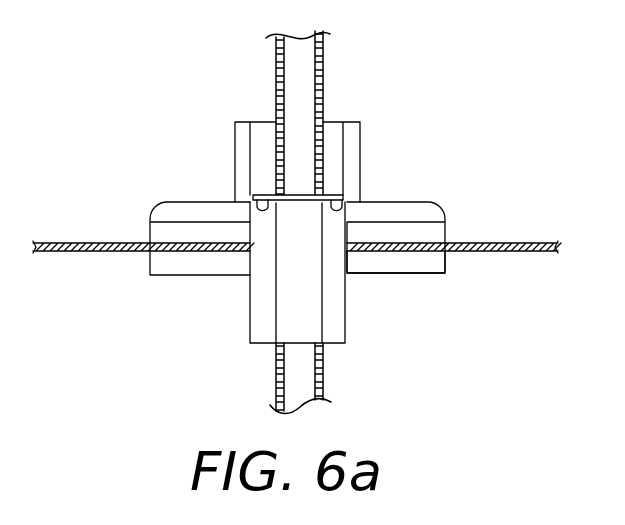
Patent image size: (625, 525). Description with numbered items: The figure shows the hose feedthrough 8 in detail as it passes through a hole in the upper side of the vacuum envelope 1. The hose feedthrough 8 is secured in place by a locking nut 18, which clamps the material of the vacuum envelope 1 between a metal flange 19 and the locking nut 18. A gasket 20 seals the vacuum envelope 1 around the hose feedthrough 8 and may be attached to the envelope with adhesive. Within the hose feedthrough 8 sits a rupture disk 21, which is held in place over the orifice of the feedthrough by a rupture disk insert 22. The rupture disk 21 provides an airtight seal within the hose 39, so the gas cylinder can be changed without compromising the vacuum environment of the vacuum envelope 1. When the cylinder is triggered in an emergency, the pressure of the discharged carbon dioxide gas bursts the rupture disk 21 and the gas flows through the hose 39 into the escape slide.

The vacuum envelope 1 is at (82, 243).
The hose feedthrough 8 is at (257, 295).
The locking nut 18 is at (380, 260).
The metal flange 19 is at (213, 208).
The gasket 20 is at (435, 225).
The rupture disk 21 is at (297, 198).
The rupture disk insert 22 is at (333, 133).
The hose 39 is at (293, 70).